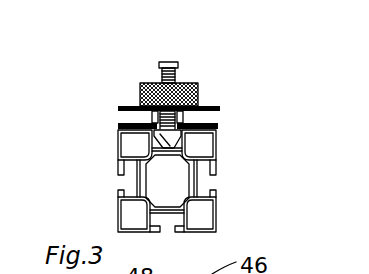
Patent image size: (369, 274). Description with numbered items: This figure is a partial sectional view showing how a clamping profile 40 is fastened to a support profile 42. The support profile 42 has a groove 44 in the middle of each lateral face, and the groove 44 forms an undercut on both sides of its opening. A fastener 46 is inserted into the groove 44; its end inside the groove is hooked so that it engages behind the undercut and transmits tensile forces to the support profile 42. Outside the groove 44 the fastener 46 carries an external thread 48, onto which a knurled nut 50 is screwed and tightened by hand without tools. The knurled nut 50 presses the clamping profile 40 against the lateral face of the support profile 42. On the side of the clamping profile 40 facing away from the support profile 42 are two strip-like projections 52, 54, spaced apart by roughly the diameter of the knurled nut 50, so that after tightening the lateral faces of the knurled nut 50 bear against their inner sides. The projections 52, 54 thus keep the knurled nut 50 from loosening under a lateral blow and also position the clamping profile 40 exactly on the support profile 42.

The clamping profile 40 is at (221, 121).
The support profile 42 is at (221, 164).
The groove 44 is at (160, 140).
The fastener 46 is at (178, 66).
The external thread 48 is at (160, 76).
The knurled nut 50 is at (199, 96).
The strip-like projection 52 is at (205, 104).
The strip-like projection 54 is at (135, 106).